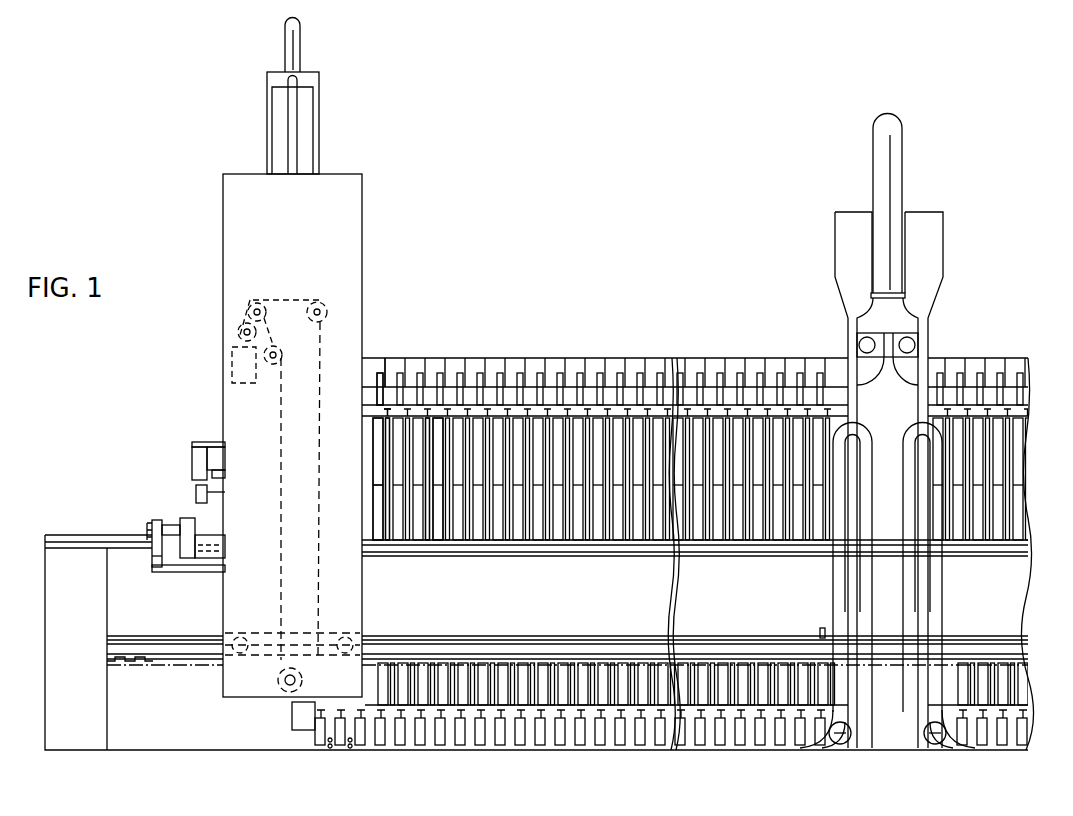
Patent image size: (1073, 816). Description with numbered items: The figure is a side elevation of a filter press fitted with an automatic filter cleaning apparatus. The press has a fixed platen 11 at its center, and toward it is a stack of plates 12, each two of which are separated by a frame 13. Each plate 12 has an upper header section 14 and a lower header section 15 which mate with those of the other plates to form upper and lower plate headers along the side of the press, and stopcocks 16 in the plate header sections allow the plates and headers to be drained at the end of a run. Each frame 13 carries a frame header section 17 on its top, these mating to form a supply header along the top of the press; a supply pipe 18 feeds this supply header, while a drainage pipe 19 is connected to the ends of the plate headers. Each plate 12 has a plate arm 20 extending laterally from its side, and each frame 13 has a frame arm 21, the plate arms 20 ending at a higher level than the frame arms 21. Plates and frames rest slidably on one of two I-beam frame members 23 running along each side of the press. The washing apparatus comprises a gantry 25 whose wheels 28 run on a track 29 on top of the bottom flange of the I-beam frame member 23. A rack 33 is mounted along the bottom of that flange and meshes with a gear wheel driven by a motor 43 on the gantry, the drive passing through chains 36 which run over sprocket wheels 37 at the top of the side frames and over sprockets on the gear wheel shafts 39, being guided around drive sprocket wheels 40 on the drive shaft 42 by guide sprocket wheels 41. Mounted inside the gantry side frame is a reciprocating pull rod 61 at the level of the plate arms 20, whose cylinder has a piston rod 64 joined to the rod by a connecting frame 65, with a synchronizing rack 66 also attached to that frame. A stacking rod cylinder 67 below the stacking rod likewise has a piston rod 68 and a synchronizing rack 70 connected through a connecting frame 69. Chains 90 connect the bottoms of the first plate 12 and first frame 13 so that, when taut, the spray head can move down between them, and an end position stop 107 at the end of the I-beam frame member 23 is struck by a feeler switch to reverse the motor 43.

The fixed platen 11 is at (870, 400).
The plate 12 is at (548, 378).
The frame 13 is at (545, 362).
The upper header section 14 is at (598, 420).
The lower header section 15 is at (553, 720).
The stopcock 16 is at (632, 420).
The frame header section 17 is at (498, 358).
The supply pipe 18 is at (878, 158).
The drainage pipe 19 is at (838, 578).
The plate arm 20 is at (440, 515).
The frame arm 21 is at (428, 528).
The I-beam frame member 23 is at (578, 599).
The gantry 25 is at (352, 178).
The wheel 28 is at (223, 640).
The track 29 is at (150, 640).
The rack 33 is at (638, 665).
The chain 36 is at (280, 510).
The sprocket wheel 37 is at (325, 302).
The gear wheel shaft 39 is at (278, 680).
The drive sprocket wheel 40 is at (250, 300).
The guide sprocket wheel 41 is at (272, 366).
The drive shaft 42 is at (270, 300).
The motor 43 is at (237, 372).
The pull rod 61 is at (198, 490).
The piston rod 64 is at (206, 465).
The connecting frame 65 is at (198, 454).
The synchronizing rack 66 is at (222, 441).
The stacking rod cylinder 67 is at (205, 560).
The piston rod 68 is at (154, 560).
The connecting frame 69 is at (152, 540).
The synchronizing rack 70 is at (165, 571).
The chain 90 is at (348, 745).
The end position stop 107 is at (821, 630).